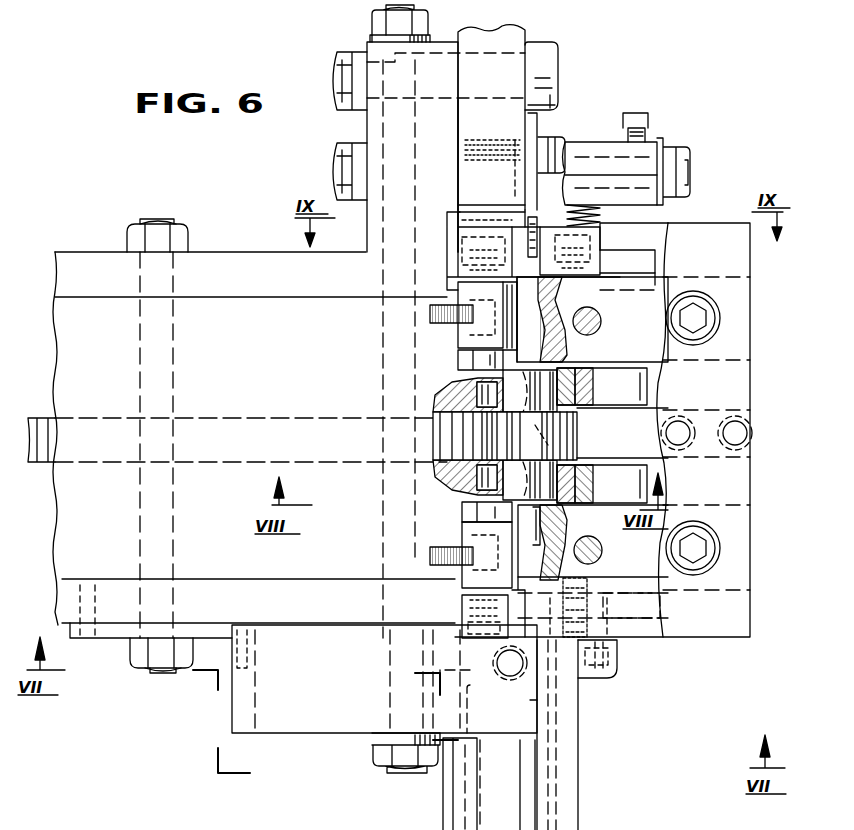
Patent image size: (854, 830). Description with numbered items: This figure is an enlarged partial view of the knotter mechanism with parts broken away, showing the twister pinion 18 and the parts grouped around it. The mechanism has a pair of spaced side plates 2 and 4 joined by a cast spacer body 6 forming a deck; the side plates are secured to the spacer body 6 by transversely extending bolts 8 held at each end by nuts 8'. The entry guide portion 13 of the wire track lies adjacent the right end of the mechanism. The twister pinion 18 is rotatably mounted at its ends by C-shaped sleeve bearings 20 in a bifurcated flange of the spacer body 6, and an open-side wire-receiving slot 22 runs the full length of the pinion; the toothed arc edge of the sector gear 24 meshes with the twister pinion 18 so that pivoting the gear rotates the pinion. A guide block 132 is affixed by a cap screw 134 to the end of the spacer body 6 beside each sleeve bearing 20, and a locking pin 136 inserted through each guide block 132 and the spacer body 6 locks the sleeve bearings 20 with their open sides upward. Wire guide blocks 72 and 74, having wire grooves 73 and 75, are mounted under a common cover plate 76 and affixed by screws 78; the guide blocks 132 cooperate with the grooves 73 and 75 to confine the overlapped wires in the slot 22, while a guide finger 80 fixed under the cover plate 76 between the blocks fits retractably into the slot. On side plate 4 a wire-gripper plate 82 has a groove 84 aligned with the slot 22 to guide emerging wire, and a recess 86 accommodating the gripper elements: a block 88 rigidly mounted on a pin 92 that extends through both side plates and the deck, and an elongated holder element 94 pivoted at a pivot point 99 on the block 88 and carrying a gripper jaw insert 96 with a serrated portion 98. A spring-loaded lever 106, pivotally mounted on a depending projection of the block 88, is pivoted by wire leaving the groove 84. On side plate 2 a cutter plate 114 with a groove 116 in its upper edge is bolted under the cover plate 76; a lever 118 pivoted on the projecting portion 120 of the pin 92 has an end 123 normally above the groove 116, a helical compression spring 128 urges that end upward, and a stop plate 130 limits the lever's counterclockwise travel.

The side plate 2 is at (68, 600).
The side plate 4 is at (58, 280).
The spacer body 6 is at (60, 511).
The bolt 8 is at (172, 445).
The nut 8' is at (157, 447).
The entry guide portion 13 is at (568, 790).
The twister pinion 18 is at (571, 442).
The sleeve bearing 20 is at (582, 392).
The wire-receiving slot 22 is at (528, 372).
The sector gear 24 is at (450, 441).
The wire guide block 72 is at (620, 564).
The wire groove 73 is at (558, 530).
The wire guide block 74 is at (640, 346).
The wire groove 75 is at (560, 308).
The cover plate 76 is at (722, 394).
The screw 78 is at (603, 326).
The guide finger 80 is at (652, 455).
The wire-gripper plate 82 is at (600, 232).
The groove 84 is at (510, 235).
The recess 86 is at (521, 294).
The block 88 is at (368, 123).
The pin 92 is at (388, 220).
The holder element 94 is at (510, 38).
The gripper jaw insert 96 is at (540, 134).
The serrated portion 98 is at (537, 240).
The pivot point 99 is at (555, 60).
The spring-loaded lever 106 is at (642, 198).
The cutter plate 114 is at (619, 655).
The groove 116 is at (538, 593).
The lever 118 is at (335, 730).
The projecting portion of pin 120 is at (404, 774).
The lever end 123 is at (537, 704).
The helical compression spring 128 is at (493, 668).
The stop plate 130 is at (250, 660).
The guide block 132 is at (458, 340).
The cap screw 134 is at (440, 303).
The locking pin 136 is at (480, 390).